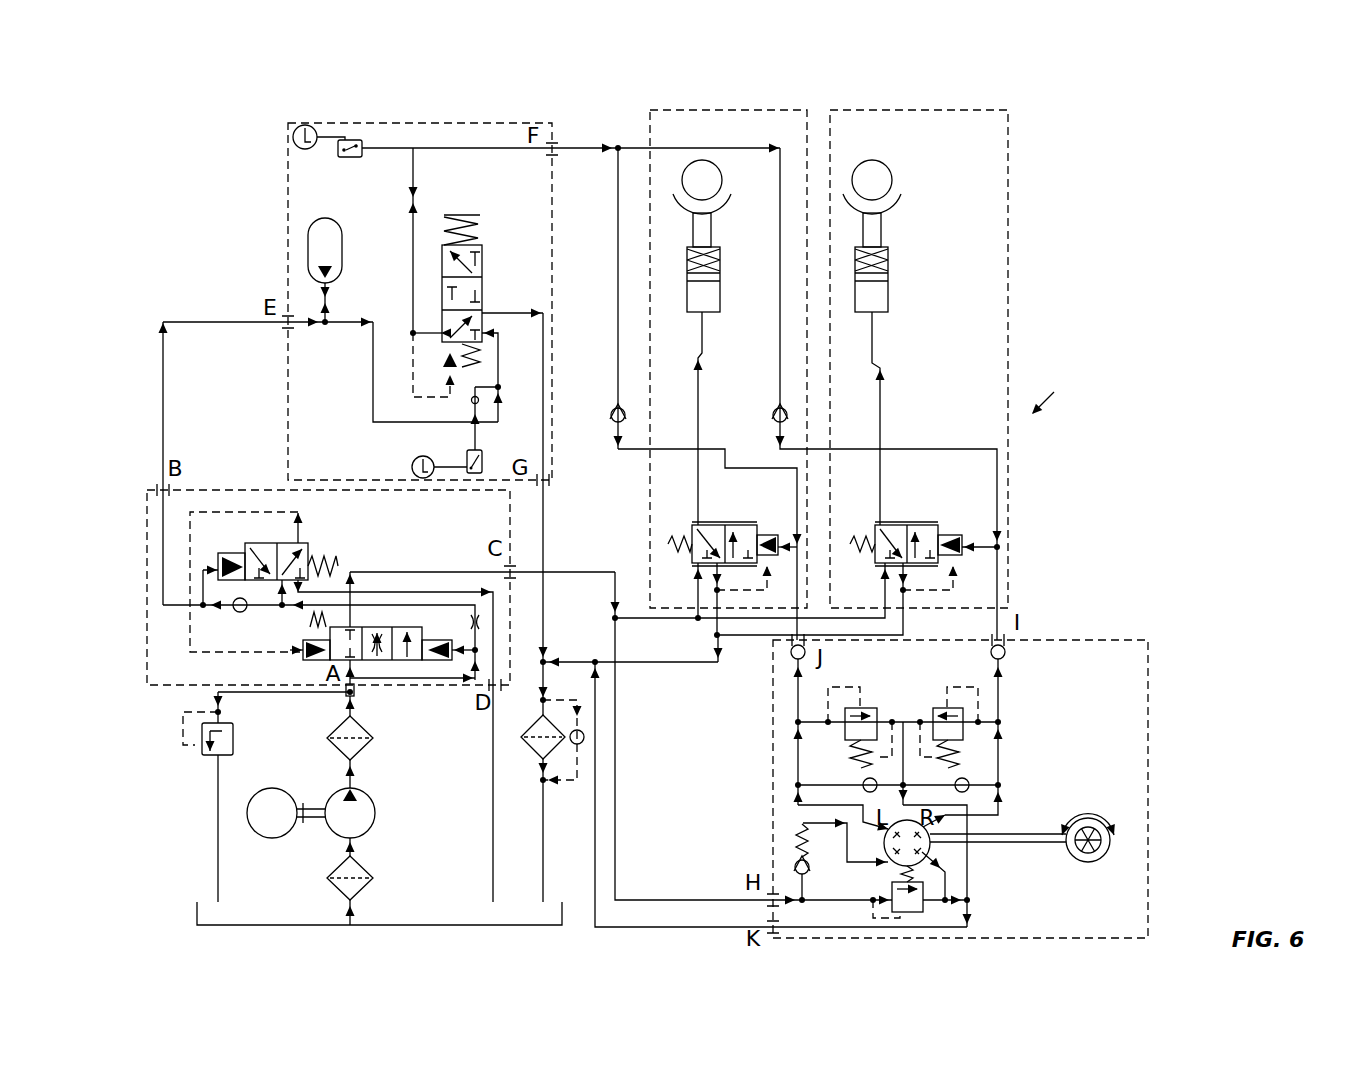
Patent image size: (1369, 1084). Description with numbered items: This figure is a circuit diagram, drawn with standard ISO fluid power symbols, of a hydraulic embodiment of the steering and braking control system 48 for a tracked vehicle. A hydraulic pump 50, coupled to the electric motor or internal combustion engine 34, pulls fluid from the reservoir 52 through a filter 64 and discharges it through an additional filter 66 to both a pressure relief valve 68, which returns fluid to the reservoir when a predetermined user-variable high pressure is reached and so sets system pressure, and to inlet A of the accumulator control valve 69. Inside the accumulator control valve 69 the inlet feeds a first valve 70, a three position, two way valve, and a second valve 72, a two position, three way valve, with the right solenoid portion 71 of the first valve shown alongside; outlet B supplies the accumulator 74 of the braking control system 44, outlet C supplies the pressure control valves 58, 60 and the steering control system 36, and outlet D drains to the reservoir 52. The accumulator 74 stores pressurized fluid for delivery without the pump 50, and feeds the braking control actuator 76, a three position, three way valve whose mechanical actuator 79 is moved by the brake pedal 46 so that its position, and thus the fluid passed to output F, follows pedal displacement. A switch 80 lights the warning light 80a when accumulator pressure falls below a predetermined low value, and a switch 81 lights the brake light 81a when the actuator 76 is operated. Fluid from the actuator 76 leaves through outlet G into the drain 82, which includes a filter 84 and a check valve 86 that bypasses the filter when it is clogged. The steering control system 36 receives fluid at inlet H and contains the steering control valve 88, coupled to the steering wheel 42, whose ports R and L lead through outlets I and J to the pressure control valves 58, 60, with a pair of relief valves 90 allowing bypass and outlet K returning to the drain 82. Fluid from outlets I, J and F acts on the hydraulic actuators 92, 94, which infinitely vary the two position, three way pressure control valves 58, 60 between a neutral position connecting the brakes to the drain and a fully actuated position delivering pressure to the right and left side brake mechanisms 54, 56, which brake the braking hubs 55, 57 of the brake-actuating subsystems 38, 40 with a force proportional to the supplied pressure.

The electric motor or internal combustion engine 34 is at (268, 786).
The steering control system 36 is at (1100, 660).
The brake-actuating subsystem 38 is at (1011, 143).
The brake-actuating subsystem 40 is at (655, 124).
The steering wheel 42 is at (1110, 845).
The braking control system 44 is at (302, 182).
The brake pedal 46 is at (482, 263).
The steering and braking control system 48 is at (1054, 394).
The hydraulic pump 50 is at (371, 790).
The reservoir 52 is at (399, 925).
The right side brake mechanism 54 is at (890, 252).
The braking hub 55 is at (902, 221).
The left side brake mechanism 56 is at (716, 268).
The braking hub 57 is at (717, 213).
The pressure control valve 58 is at (936, 521).
The pressure control valve 60 is at (700, 527).
The filter 64 is at (367, 864).
The filter 66 is at (370, 724).
The pressure relief valve 68 is at (234, 724).
The accumulator control valve 69 is at (346, 510).
The first valve 70 is at (324, 662).
The valve solenoid 71 is at (414, 680).
The second valve 72 is at (311, 546).
The accumulator 74 is at (332, 226).
The braking control actuator 76 is at (485, 244).
The mechanical actuator 79 is at (456, 238).
The switch 80 is at (468, 454).
The warning light 80a is at (424, 480).
The switch 81 is at (362, 143).
The brake light 81a is at (293, 137).
The drain 82 is at (547, 537).
The filter 84 is at (526, 728).
The check valve 86 is at (585, 746).
The steering control valve 88 is at (934, 850).
The relief valves 90 is at (934, 706).
The hydraulic actuator 92 is at (947, 539).
The hydraulic actuator 94 is at (764, 536).